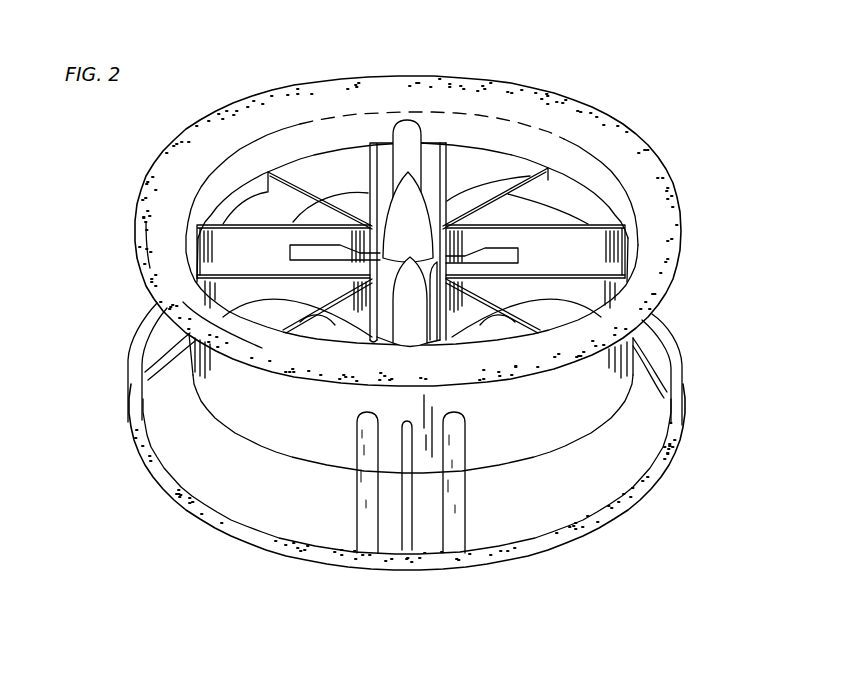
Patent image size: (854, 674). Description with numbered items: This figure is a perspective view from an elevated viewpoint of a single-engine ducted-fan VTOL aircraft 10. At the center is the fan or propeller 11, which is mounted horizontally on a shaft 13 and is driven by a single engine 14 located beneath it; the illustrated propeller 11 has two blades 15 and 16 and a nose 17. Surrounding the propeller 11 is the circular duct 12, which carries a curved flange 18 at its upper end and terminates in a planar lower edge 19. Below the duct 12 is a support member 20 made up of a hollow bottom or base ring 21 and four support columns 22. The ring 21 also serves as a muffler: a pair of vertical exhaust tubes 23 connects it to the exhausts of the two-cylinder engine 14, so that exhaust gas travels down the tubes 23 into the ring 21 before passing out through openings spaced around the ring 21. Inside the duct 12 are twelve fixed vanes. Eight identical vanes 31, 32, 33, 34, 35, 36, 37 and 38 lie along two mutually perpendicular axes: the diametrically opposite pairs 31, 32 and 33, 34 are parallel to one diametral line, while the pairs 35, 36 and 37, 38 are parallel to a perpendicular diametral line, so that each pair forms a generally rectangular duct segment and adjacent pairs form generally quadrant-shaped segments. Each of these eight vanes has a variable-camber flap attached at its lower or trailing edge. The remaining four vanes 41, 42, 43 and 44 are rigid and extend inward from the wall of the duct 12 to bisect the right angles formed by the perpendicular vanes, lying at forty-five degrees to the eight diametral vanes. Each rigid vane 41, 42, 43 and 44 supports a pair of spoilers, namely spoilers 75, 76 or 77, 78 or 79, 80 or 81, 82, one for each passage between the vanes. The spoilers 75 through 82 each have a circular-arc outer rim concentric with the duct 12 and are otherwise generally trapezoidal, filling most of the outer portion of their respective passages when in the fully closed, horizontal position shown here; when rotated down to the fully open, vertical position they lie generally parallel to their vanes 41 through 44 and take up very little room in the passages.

The single-engine ducted-fan VTOL aircraft 10 is at (592, 97).
The propeller 11 is at (388, 182).
The duct 12 is at (298, 80).
The shaft 13 is at (375, 337).
The engine 14 is at (290, 245).
The blade 15 is at (425, 128).
The blade 16 is at (407, 330).
The nose 17 is at (418, 229).
The curved flange 18 is at (644, 165).
The planar lower edge 19 is at (517, 377).
The support member 20 is at (616, 535).
The base ring 21 is at (210, 510).
The support columns 22 is at (126, 370).
The vertical exhaust tubes 23 is at (365, 545).
The vane 31 is at (584, 254).
The vane 32 is at (538, 303).
The vane 33 is at (241, 257).
The vane 34 is at (256, 303).
The vane 35 is at (435, 147).
The vane 36 is at (392, 147).
The vane 37 is at (433, 337).
The vane 38 is at (370, 337).
The rigid vane 41 is at (512, 330).
The rigid vane 42 is at (296, 330).
The rigid vane 43 is at (274, 170).
The rigid vane 44 is at (528, 164).
The spoiler 75 is at (552, 313).
The spoiler 76 is at (493, 325).
The spoiler 77 is at (335, 328).
The spoiler 78 is at (258, 317).
The spoiler 79 is at (278, 216).
The spoiler 80 is at (343, 193).
The spoiler 81 is at (487, 189).
The spoiler 82 is at (561, 216).